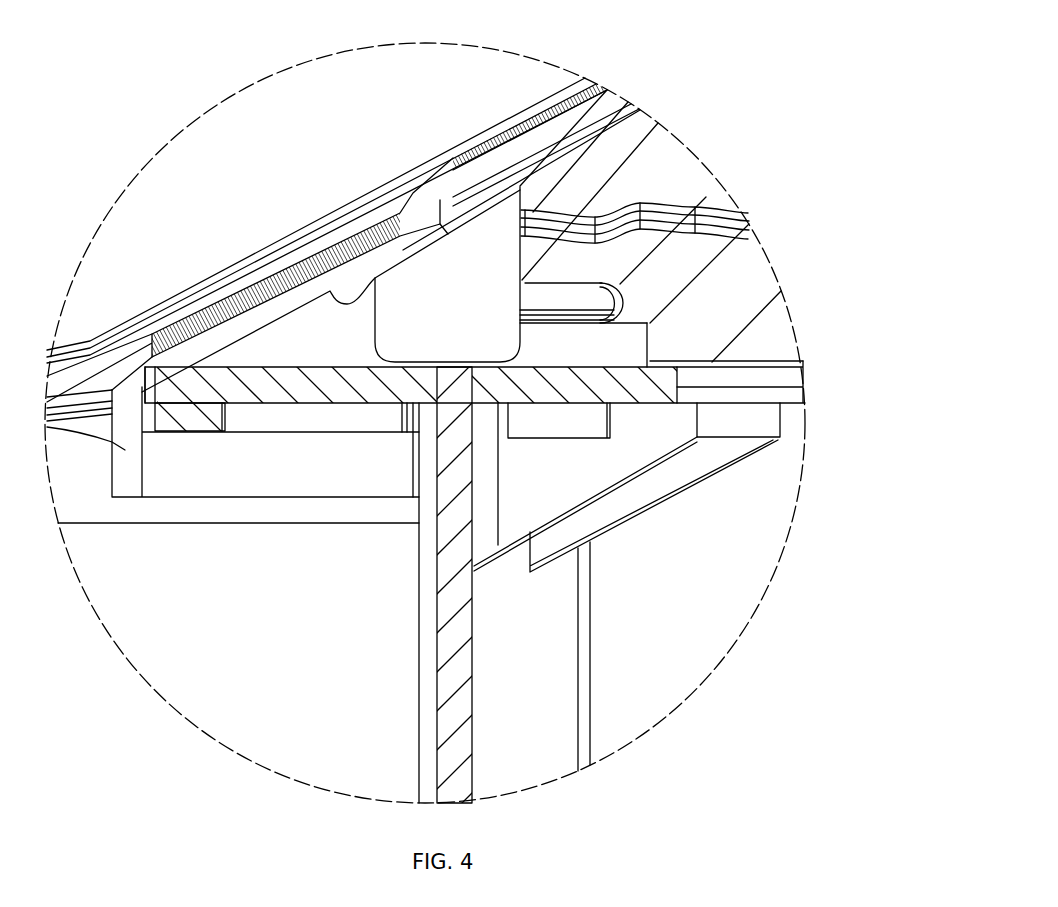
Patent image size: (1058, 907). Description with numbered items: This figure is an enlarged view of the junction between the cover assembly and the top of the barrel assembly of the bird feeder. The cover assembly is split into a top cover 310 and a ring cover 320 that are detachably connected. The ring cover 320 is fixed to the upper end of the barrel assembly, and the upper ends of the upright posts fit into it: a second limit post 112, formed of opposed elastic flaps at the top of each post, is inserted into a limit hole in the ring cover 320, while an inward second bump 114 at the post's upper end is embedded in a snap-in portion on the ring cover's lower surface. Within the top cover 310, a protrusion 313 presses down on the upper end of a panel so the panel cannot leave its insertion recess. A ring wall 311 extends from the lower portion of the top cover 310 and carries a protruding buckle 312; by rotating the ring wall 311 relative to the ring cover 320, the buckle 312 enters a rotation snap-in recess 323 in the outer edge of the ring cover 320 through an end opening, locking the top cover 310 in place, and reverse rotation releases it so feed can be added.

The top cover 310 is at (273, 253).
The ring wall 311 is at (130, 478).
The protruding buckle 312 is at (188, 415).
The protrusion 313 is at (447, 323).
The ring cover 320 is at (347, 383).
The rotation snap-in recess 323 is at (197, 392).
The second limit post 112 is at (583, 297).
The second bump 114 is at (715, 452).